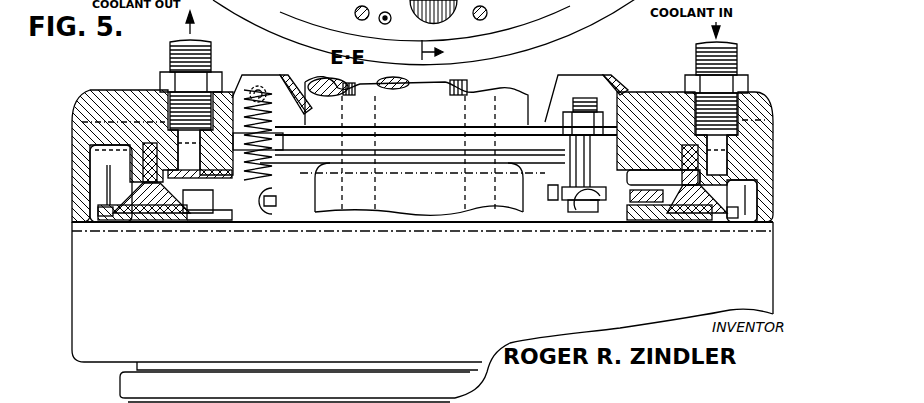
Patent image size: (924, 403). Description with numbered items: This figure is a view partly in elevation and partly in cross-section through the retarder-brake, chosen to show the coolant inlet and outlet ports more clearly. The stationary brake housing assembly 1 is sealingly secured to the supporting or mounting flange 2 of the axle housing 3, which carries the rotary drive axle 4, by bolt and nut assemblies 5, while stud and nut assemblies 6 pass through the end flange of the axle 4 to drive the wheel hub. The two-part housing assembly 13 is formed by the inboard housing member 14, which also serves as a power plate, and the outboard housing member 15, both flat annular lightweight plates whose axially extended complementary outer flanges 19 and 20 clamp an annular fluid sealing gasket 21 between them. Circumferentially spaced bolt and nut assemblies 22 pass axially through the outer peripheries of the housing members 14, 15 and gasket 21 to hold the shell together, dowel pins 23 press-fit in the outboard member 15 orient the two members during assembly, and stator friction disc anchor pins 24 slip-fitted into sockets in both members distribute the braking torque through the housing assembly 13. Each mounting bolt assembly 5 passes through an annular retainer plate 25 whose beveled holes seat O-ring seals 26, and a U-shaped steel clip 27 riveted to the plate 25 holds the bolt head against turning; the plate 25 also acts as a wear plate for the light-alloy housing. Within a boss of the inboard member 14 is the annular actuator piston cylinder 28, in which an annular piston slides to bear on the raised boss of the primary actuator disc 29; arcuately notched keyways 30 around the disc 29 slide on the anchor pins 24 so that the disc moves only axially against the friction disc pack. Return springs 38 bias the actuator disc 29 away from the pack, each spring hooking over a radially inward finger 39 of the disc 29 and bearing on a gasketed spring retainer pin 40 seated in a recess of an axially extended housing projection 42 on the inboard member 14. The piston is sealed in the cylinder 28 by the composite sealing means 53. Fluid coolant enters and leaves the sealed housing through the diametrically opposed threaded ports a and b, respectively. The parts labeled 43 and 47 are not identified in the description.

The stationary brake housing assembly 1 is at (73, 362).
The supporting or mounting flange 2 is at (529, 122).
The axle housing 3 is at (325, 80).
The rotary drive axle 4 is at (467, 93).
The bolt and nut assemblies 5 is at (603, 95).
The stud and nut assemblies 6 is at (439, 52).
The housing assembly 13 is at (75, 275).
The inboard housing member 14 is at (80, 128).
The outboard housing member 15 is at (78, 318).
The outer flange 19 is at (82, 210).
The outer flange 20 is at (78, 251).
The annular fluid sealing gasket 21 is at (72, 232).
The bolt and nut assemblies 22 is at (350, 22).
The dowel pins 23 is at (378, 22).
The stator friction disc anchor pins 24 is at (300, 6).
The annular plate 25 is at (293, 188).
The O-ring seals 26 is at (612, 152).
The bolt retainer or clip 27 is at (597, 222).
The actuator piston cylinder 28 is at (125, 108).
The primary actuator disc 29 is at (700, 220).
The arcuately notched keyways 30 is at (112, 225).
The return springs 38 is at (268, 96).
The radially inwardly projecting finger 39 is at (288, 190).
The gasketed spring retainer pin 40 is at (240, 80).
The axially extended housing projections 42 is at (268, 78).
The hub 43 is at (410, 10).
The pin 47 is at (462, 26).
The composite sealing means 53 is at (88, 100).
The threaded port a is at (738, 120).
The threaded port b is at (148, 92).